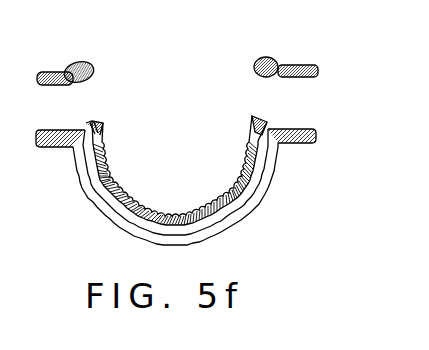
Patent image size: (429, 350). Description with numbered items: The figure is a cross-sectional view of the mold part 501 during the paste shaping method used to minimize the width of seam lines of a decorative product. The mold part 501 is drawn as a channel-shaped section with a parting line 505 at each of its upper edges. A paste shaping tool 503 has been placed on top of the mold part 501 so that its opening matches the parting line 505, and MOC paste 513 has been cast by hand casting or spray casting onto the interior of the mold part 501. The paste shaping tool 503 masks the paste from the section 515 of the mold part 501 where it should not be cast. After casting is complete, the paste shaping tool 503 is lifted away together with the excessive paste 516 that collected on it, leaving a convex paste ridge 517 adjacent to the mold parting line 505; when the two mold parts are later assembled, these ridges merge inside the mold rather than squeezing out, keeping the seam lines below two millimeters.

The mold part 501 is at (98, 180).
The paste shaping tool 503 is at (60, 72).
The parting line 505 is at (82, 124).
The MOC paste 513 is at (100, 143).
The section 515 is at (292, 126).
The excessive paste 516 is at (77, 68).
The convex paste ridge 517 is at (90, 124).